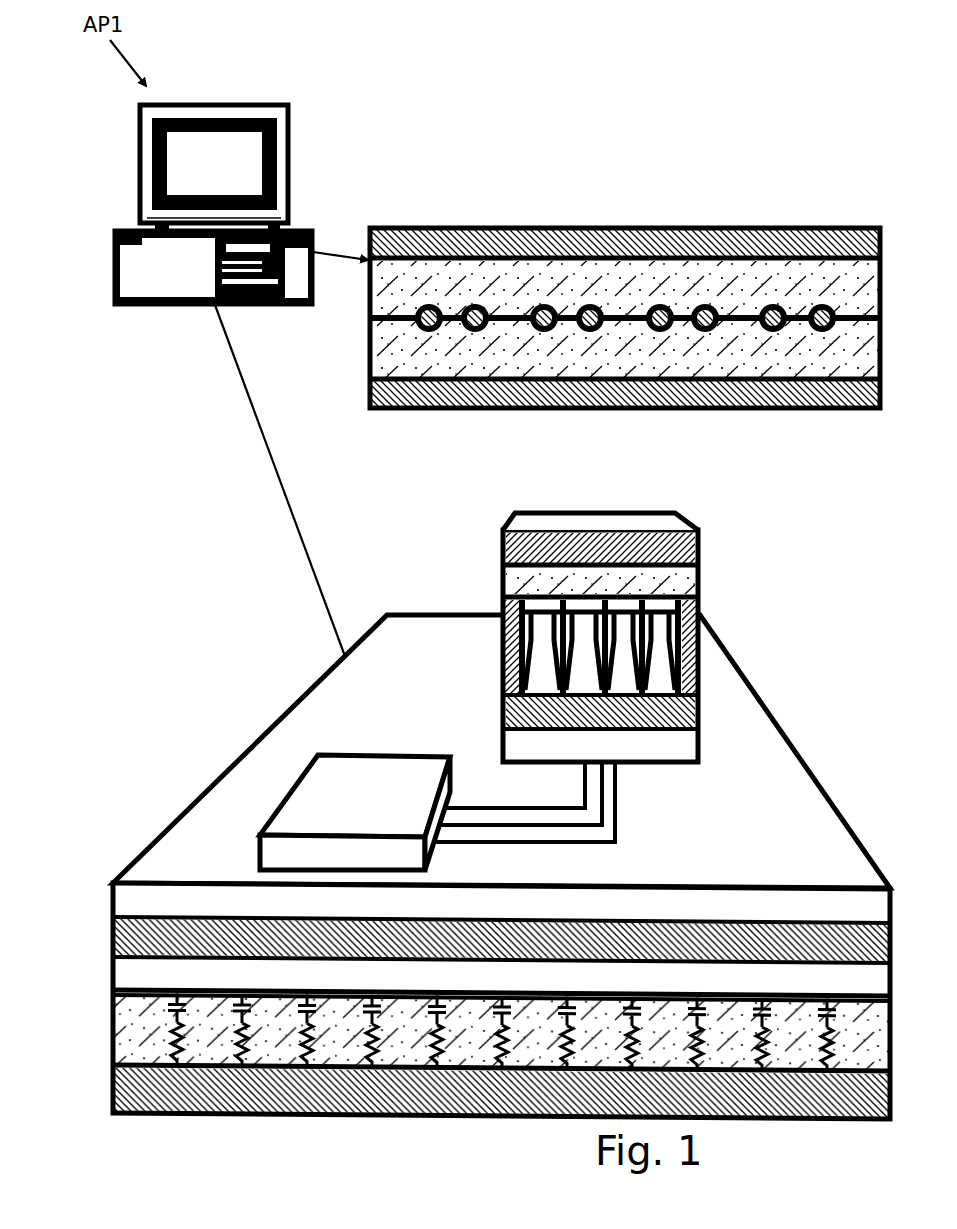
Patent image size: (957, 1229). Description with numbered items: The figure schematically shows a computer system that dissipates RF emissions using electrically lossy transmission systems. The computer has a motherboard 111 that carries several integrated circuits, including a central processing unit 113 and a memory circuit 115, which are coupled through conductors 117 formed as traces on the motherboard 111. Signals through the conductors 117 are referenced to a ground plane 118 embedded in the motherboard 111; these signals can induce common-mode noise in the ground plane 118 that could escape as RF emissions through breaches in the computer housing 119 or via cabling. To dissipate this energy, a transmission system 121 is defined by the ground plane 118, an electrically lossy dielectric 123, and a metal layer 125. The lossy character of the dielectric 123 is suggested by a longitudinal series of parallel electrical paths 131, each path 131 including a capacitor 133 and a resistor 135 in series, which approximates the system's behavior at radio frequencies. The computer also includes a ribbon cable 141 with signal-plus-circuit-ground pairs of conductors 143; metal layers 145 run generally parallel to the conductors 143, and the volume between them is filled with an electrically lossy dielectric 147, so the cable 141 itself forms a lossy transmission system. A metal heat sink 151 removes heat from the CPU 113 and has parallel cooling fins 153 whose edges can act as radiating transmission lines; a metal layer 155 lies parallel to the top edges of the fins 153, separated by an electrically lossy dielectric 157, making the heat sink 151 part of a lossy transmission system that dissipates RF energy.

The motherboard 111 is at (468, 867).
The central processing unit (CPU) 113 is at (573, 637).
The memory circuit 115 is at (391, 801).
The conductors 117 is at (617, 795).
The ground plane 118 is at (364, 952).
The computer housing 119 is at (181, 283).
The transmission system 121 is at (109, 1042).
The electrically lossy dielectric 123 is at (113, 1005).
The metal layer 125 is at (370, 1101).
The electrical paths 131 is at (760, 990).
The capacitor 133 is at (816, 1010).
The resistor 135 is at (834, 1040).
The ribbon cable 141 is at (625, 302).
The conductors 143 is at (773, 316).
The metal layers 145 is at (848, 230).
The electrically lossy dielectric 147 is at (638, 360).
The heat sink 151 is at (602, 721).
The cooling fins 153 is at (506, 672).
The metal layer 155 is at (628, 558).
The electrically lossy dielectric 157 is at (628, 591).